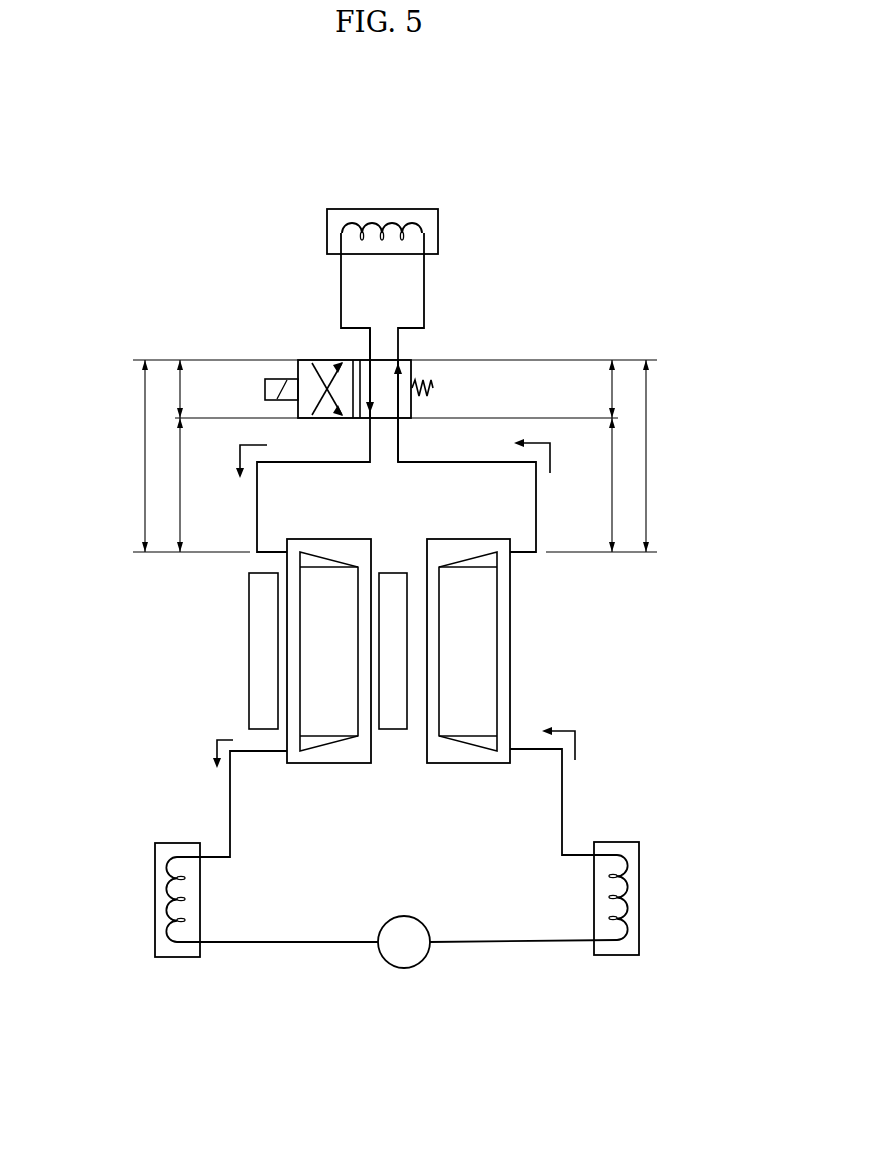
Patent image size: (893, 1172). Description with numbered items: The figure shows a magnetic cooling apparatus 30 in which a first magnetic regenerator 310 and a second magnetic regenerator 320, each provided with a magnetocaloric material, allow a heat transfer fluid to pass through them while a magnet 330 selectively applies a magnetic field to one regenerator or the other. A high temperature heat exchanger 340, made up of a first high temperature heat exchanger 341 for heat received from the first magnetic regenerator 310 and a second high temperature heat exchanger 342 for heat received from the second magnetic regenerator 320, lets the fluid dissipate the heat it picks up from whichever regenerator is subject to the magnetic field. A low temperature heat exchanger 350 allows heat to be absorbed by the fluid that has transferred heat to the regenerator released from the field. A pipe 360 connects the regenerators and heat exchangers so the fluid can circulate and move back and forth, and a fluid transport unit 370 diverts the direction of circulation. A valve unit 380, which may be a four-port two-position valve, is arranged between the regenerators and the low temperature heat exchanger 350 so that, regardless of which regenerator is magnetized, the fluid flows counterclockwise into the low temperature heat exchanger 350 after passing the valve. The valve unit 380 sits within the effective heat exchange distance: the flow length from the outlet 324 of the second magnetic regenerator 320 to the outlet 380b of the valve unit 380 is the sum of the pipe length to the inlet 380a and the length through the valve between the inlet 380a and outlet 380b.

The magnetic cooling apparatus 30 is at (395, 118).
The first magnetic regenerator 310 is at (310, 538).
The second magnetic regenerator 320 is at (496, 626).
The outlet of the second magnetic regenerator 324 is at (512, 553).
The magnet 330 is at (256, 713).
The high temperature heat exchanger 340 is at (402, 890).
The first high temperature heat exchanger 341 is at (156, 850).
The second high temperature heat exchanger 342 is at (640, 852).
The low temperature heat exchanger 350 is at (418, 209).
The pipe 360 is at (538, 942).
The fluid transport unit 370 is at (383, 964).
The valve unit 380 is at (410, 359).
The inlet of the valve unit 380a is at (399, 418).
The outlet of the valve unit 380b is at (392, 358).